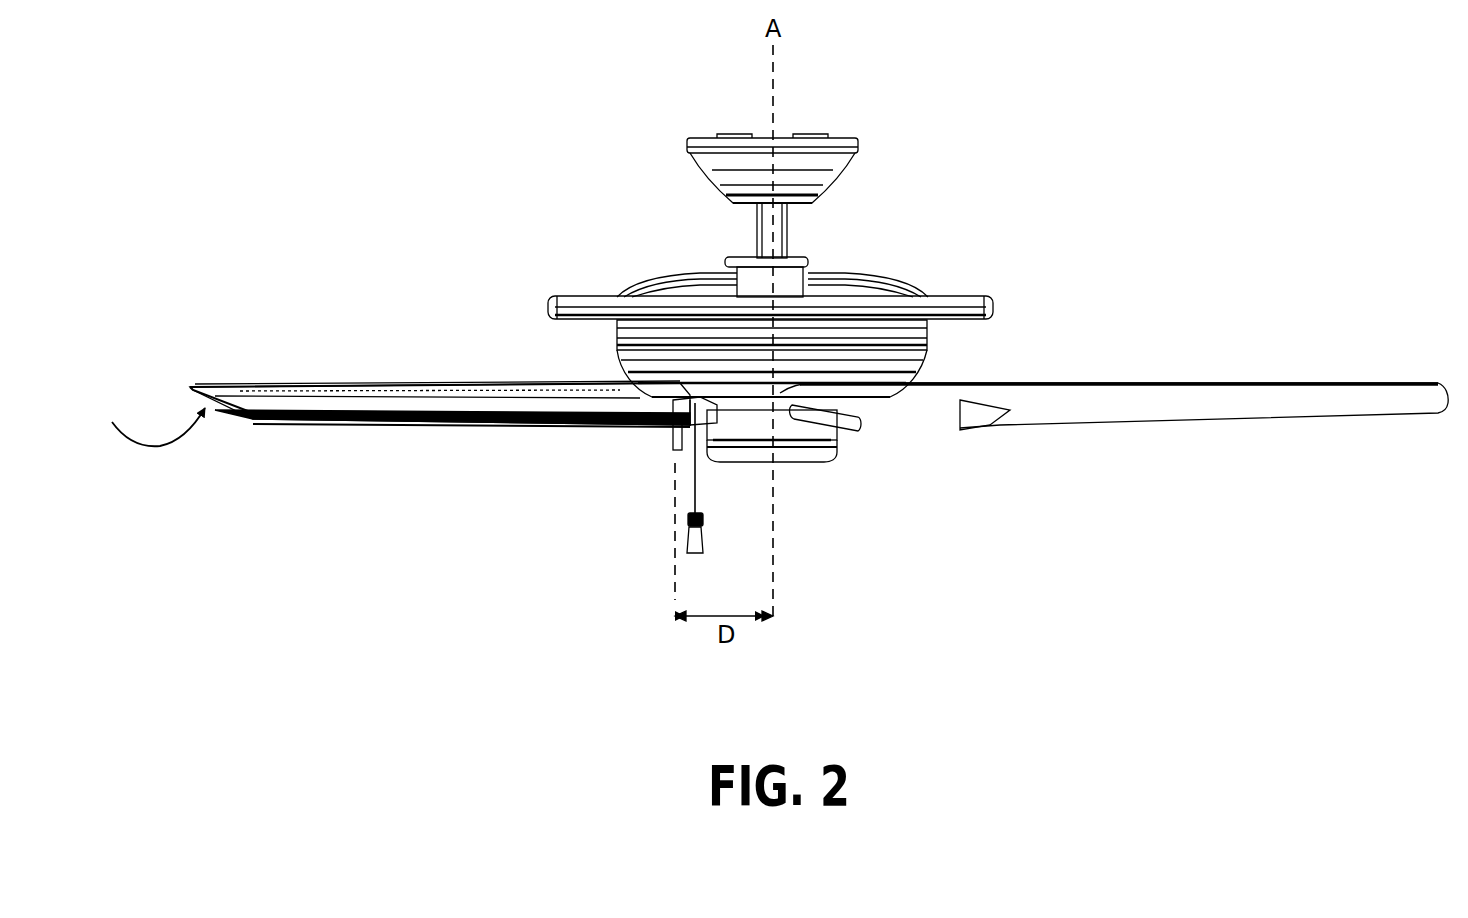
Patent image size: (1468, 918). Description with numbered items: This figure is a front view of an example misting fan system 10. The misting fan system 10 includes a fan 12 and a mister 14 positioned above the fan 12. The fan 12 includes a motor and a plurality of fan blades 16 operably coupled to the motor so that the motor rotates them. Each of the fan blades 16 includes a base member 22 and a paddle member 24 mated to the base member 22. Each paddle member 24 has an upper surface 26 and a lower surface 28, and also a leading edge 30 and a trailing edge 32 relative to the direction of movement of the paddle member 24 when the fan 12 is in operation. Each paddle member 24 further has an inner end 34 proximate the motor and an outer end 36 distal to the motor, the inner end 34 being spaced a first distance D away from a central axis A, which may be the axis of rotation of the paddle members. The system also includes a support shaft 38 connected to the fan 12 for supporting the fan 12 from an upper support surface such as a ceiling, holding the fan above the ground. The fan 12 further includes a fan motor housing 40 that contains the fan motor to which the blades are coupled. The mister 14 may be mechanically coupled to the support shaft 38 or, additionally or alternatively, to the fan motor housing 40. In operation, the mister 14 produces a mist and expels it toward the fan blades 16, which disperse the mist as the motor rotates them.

The misting fan system 10 is at (980, 183).
The fan 12 is at (912, 450).
The mister 14 is at (538, 298).
The fan blades 16 is at (270, 395).
The base member 22 is at (690, 450).
The paddle member 24 is at (362, 395).
The upper surface 26 is at (413, 402).
The lower surface 28 is at (149, 419).
The leading edge 30 is at (468, 383).
The trailing edge 32 is at (497, 425).
The inner end 34 is at (632, 390).
The outer end 36 is at (240, 413).
The support shaft 38 is at (760, 241).
The fan motor housing 40 is at (663, 338).